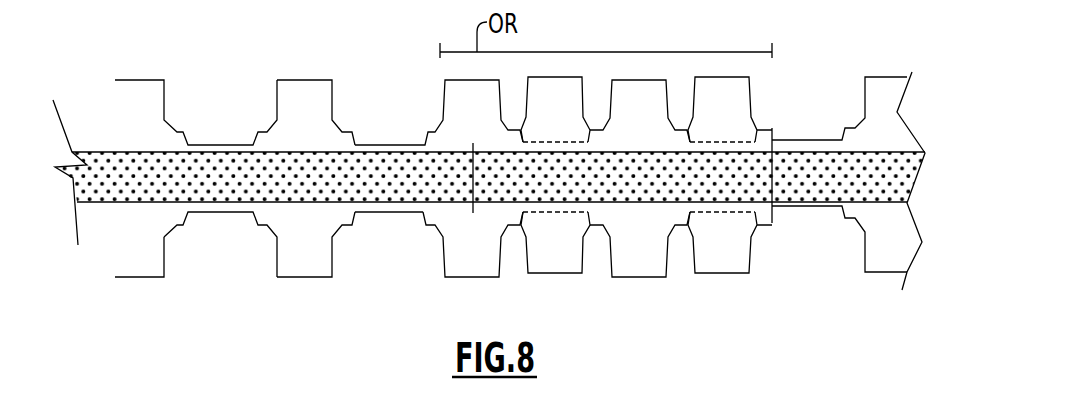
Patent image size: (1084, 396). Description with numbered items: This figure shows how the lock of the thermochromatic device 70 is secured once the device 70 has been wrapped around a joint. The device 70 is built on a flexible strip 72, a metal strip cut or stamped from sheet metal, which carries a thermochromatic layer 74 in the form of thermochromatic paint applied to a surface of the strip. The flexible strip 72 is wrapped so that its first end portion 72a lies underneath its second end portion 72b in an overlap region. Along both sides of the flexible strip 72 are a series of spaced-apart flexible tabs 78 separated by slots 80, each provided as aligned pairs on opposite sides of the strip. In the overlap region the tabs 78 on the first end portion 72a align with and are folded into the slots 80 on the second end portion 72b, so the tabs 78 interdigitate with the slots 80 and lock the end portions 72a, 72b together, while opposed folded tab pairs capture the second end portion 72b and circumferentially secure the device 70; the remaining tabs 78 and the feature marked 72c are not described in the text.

The device 70 is at (249, 98).
The flexible strip 72 is at (346, 215).
The first end portion 72a is at (433, 262).
The second end portion 72b is at (726, 292).
The core member portion 72c is at (303, 153).
The thermochromatic layer 74 is at (400, 172).
The tabs 78 is at (646, 95).
The slots 80 is at (585, 97).